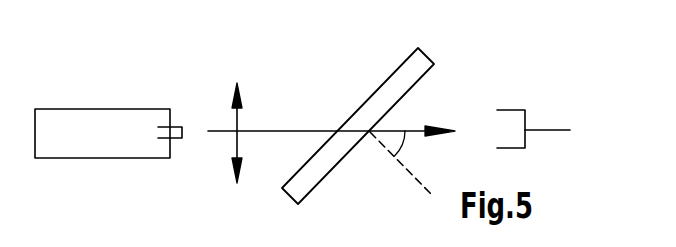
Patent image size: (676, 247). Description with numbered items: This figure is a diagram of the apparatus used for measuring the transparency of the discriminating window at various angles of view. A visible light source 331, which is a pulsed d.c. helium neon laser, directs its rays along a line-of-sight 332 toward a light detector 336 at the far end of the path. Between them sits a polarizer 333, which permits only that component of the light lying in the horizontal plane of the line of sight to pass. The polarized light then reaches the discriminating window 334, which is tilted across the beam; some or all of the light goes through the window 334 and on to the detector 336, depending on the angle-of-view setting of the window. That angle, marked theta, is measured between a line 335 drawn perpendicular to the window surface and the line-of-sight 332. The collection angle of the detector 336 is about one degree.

The visible light source 331 is at (77, 109).
The line-of-sight 332 is at (288, 133).
The polarizer 333 is at (237, 122).
The discriminating window 334 is at (395, 72).
The line perpendicular to the window surface 335 is at (421, 186).
The light detector 336 is at (527, 124).